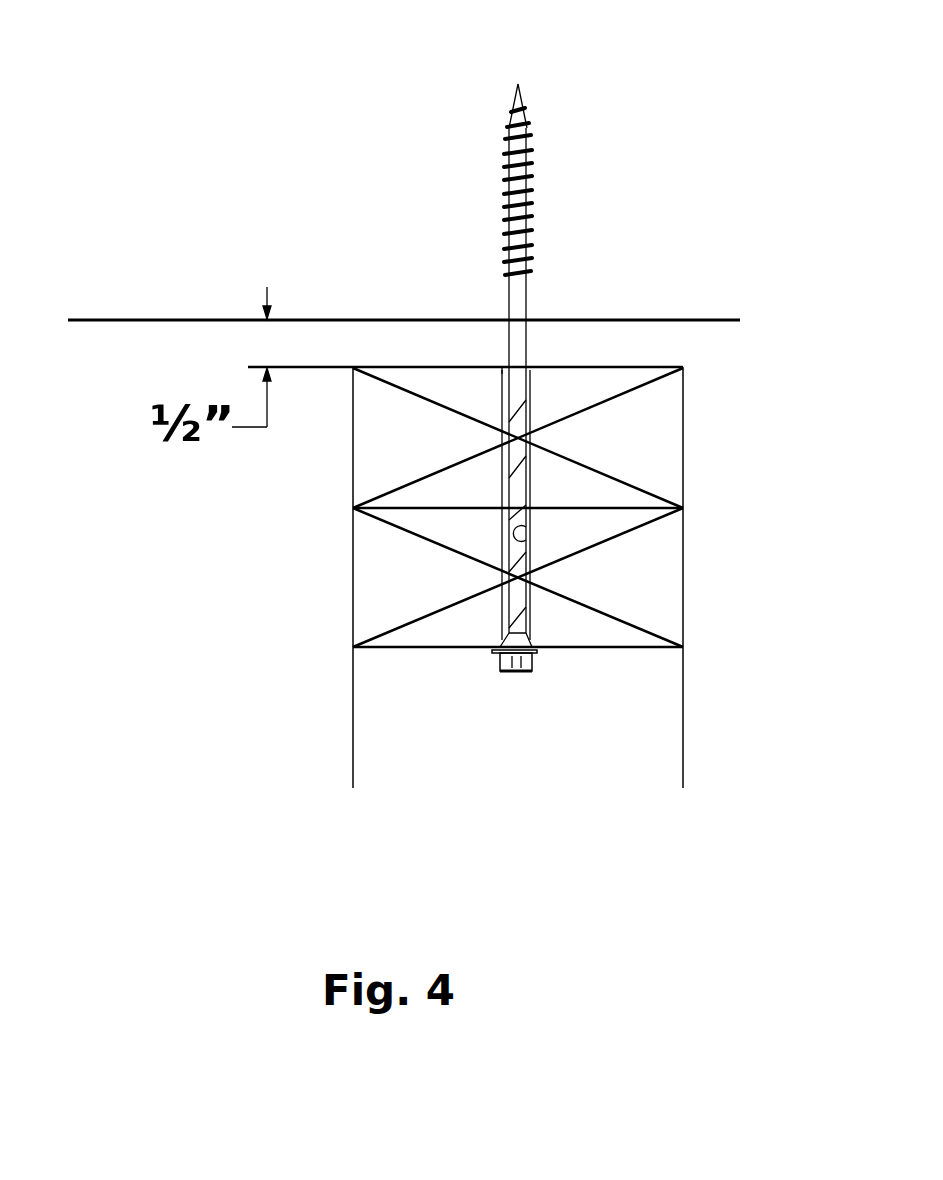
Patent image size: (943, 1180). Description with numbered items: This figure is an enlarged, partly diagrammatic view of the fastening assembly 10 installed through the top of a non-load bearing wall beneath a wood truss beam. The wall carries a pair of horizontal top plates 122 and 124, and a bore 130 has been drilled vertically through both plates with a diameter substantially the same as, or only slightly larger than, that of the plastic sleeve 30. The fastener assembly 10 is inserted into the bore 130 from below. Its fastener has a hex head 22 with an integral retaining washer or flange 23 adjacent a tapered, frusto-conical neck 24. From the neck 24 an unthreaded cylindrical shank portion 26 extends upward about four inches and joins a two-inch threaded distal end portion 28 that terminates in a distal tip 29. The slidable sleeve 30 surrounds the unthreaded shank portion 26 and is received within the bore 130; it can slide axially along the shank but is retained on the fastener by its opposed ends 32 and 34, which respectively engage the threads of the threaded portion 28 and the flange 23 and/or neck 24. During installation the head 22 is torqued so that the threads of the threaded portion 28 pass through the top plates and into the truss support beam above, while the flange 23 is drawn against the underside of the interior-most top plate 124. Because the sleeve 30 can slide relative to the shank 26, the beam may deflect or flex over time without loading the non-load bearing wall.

The fastening assembly 10 is at (470, 271).
The hex head 22 is at (512, 672).
The retaining washer or flange 23 is at (536, 655).
The tapered or frusto-conical neck 24 is at (530, 627).
The unthreaded cylindrical shank portion 26 is at (517, 340).
The threaded distal end portion 28 is at (532, 135).
The distal tip 29 is at (518, 84).
The slidable sleeve 30 is at (527, 480).
The sleeve end 32 is at (502, 368).
The sleeve end 34 is at (500, 672).
The top plate 122 is at (410, 450).
The top plate 124 is at (410, 596).
The bore 130 is at (526, 540).